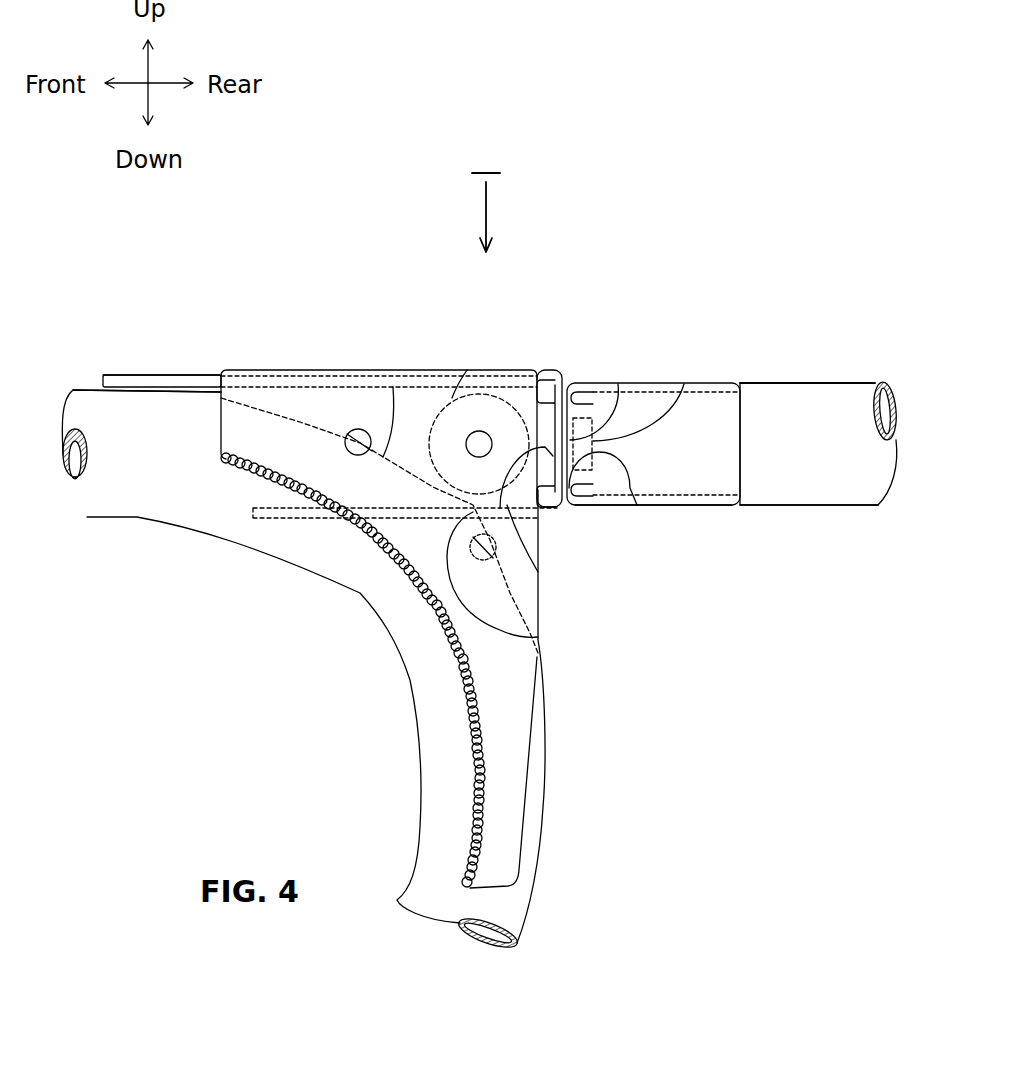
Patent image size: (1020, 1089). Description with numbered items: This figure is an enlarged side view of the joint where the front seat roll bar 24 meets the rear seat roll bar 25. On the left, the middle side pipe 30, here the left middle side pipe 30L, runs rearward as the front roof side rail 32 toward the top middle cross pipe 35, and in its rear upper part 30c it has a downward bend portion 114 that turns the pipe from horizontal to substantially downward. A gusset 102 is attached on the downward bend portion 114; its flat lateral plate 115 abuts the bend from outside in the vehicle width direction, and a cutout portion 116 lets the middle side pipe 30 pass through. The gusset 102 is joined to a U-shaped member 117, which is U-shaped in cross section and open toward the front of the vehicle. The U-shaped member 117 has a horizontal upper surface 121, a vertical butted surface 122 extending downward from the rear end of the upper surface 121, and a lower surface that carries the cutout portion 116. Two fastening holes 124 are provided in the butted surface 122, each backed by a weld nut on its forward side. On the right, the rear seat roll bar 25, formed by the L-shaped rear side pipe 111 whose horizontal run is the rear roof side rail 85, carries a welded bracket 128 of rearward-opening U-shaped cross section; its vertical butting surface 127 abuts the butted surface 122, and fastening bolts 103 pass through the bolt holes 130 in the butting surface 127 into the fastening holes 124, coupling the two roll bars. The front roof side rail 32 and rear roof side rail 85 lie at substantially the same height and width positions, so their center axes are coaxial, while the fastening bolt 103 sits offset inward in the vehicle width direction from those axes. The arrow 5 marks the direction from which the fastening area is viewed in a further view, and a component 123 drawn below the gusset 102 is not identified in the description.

The view direction arrow for FIG. 5 is at (488, 188).
The front seat roll bar 24 is at (145, 355).
The rear seat roll bar 25 is at (772, 360).
The middle side pipe 30 is at (130, 470).
The left middle side pipe 30L is at (147, 391).
The rear upper part of the middle side pipe 30c is at (393, 387).
The front roof side rail 32 is at (200, 487).
The top middle cross pipe 35 is at (460, 372).
The rear roof side rail 85 is at (837, 482).
The gusset 102 is at (530, 354).
The fastening bolt 103 is at (684, 384).
The rear side pipe 111 is at (790, 442).
The downward bend portion 114 is at (433, 387).
The lateral plate 115 is at (313, 387).
The cutout portion 116 is at (540, 637).
The U-shaped member 117 is at (181, 375).
The upper surface 121 is at (210, 374).
The butted surface 122 is at (620, 383).
The cable 123 is at (310, 520).
The fastening hole 124 is at (540, 573).
The butting surface 127 is at (548, 498).
The bracket 128 is at (713, 507).
The bolt hole 130 is at (633, 488).